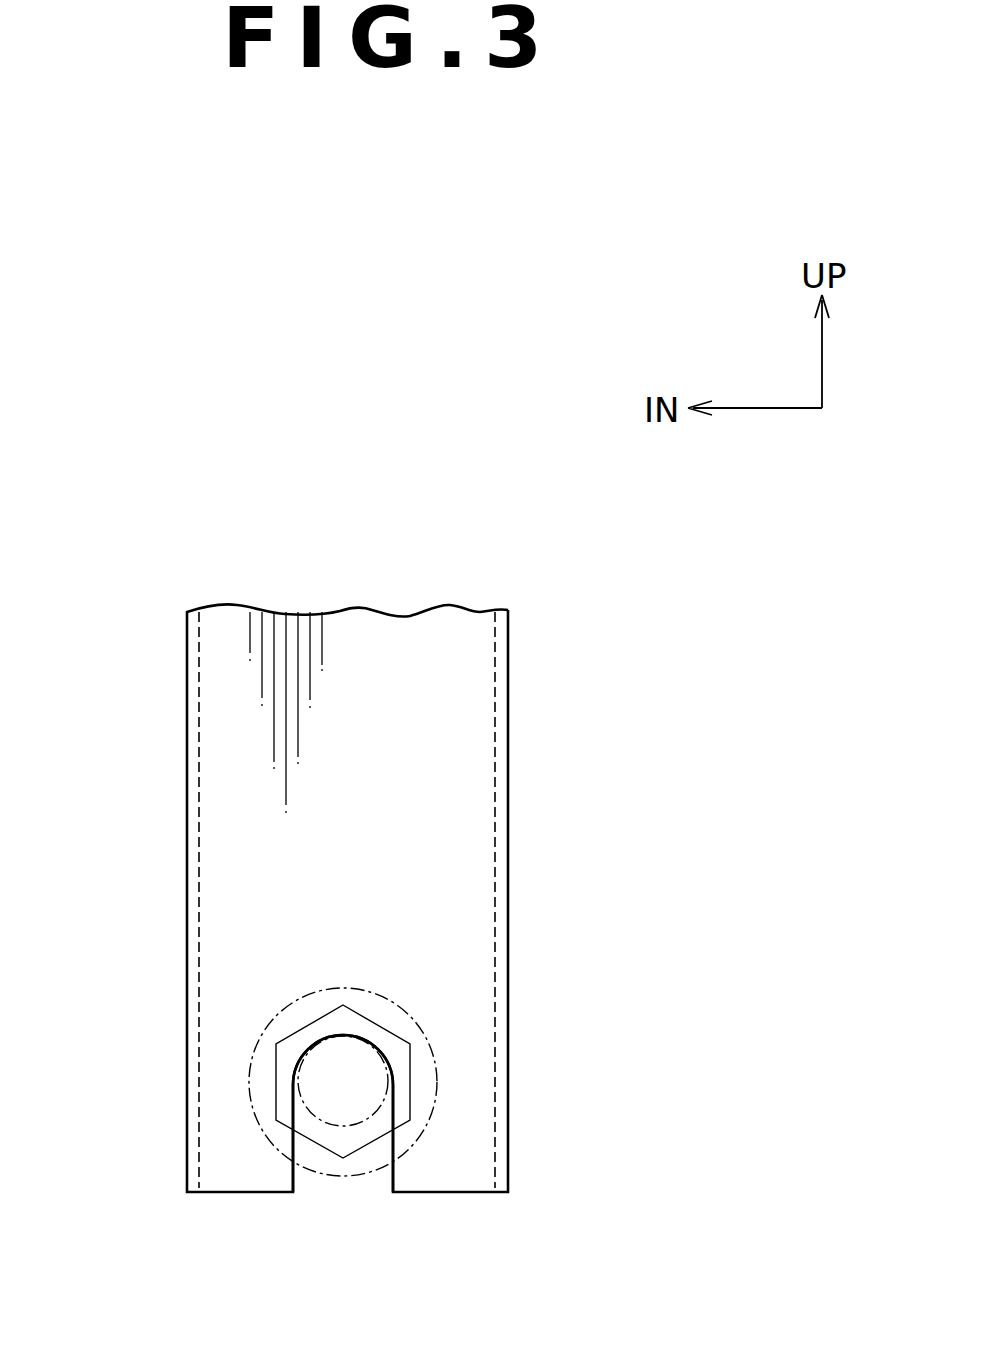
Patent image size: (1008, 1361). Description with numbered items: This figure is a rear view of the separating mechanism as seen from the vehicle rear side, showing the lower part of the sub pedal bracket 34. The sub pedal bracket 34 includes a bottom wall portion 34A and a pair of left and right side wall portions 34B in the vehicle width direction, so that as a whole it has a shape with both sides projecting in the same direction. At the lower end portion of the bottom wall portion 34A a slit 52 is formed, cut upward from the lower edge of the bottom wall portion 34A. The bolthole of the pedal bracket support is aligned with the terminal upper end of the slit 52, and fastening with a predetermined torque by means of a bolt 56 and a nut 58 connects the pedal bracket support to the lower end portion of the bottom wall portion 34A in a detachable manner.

The sub pedal bracket 34 is at (423, 607).
The bottom wall portion 34A is at (357, 647).
The side wall portions 34B is at (197, 847).
The slit 52 is at (388, 1167).
The bolt 56 is at (323, 1122).
The nut 58 is at (343, 1158).